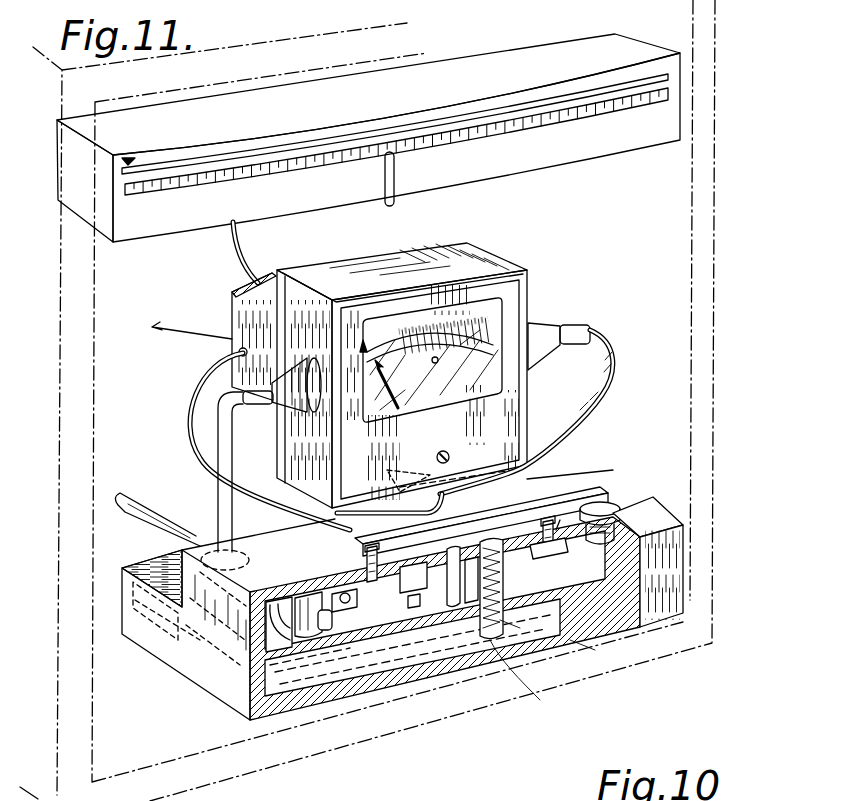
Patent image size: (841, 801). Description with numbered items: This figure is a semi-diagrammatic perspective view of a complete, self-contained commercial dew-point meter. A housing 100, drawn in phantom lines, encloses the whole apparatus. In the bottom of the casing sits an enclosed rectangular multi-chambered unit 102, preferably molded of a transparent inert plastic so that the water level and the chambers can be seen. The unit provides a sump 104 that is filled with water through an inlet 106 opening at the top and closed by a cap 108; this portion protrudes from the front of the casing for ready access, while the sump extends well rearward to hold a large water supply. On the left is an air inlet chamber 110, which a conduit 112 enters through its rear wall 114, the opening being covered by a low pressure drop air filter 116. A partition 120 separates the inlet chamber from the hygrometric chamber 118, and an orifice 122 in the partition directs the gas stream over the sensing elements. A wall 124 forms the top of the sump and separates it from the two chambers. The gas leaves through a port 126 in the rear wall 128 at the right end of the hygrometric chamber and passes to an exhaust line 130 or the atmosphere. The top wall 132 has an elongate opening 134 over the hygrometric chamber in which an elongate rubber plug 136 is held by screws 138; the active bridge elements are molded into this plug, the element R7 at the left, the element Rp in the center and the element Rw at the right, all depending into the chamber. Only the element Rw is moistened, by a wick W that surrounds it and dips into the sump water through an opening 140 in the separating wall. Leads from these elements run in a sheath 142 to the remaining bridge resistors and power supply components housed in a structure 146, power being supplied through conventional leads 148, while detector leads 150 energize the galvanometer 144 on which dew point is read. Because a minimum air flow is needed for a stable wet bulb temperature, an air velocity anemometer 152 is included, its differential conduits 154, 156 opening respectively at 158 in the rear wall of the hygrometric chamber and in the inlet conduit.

The housing 100 is at (720, 320).
The multi-chambered unit 102 is at (203, 680).
The sump 104 is at (413, 653).
The inlet 106 is at (607, 552).
The cap 108 is at (617, 502).
The air inlet chamber 110 is at (283, 643).
The conduit 112 is at (180, 528).
The rear wall 114 is at (300, 620).
The air filter 116 is at (166, 645).
The hygrometric chamber 118 is at (455, 612).
The partition 120 is at (282, 587).
The orifice 122 is at (327, 622).
The wall 124 is at (470, 605).
The port 126 is at (560, 530).
The rear wall 128 is at (556, 532).
The exhaust line 130 is at (420, 480).
The top wall 132 is at (545, 542).
The elongate opening 134 is at (416, 596).
The rubber plug 136 is at (416, 541).
The screws 138 is at (368, 546).
The opening 140 is at (567, 633).
The sheath 142 is at (212, 455).
The galvanometer 144 is at (570, 172).
The structure 146 is at (240, 308).
The leads 148 is at (183, 331).
The leads 150 is at (262, 272).
The air velocity anemometer 152 is at (540, 272).
The differential conduit 154 is at (603, 397).
The differential conduit 156 is at (232, 462).
The conduit opening 158 is at (418, 648).
The wick W is at (533, 623).
The wet bulb element Rw is at (570, 640).
The bridge element Rp is at (513, 630).
The bridge element R_T R7 is at (412, 605).